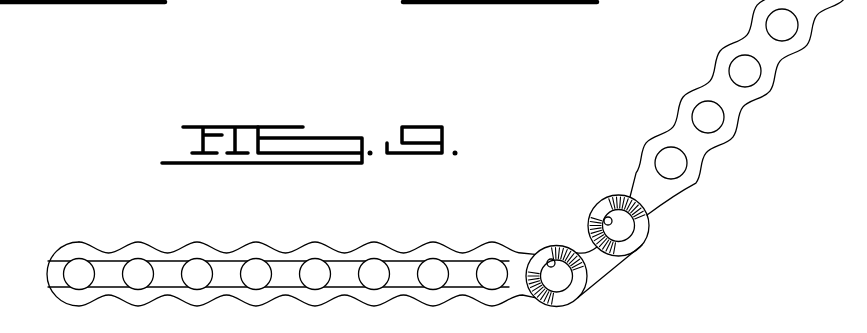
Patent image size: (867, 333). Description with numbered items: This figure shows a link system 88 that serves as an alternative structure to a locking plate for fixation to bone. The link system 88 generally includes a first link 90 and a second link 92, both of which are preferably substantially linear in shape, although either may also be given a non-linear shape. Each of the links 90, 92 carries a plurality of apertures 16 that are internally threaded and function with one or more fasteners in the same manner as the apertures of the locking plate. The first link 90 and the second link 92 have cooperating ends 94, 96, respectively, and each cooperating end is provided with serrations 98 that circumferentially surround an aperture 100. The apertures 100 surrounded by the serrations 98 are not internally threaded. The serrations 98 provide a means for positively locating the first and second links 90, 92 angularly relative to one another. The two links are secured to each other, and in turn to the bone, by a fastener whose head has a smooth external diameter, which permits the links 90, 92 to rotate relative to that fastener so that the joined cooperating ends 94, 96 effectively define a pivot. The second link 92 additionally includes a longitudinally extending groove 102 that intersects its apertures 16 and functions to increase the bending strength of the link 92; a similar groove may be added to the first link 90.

The apertures 16 is at (77, 259).
The link system 88 is at (650, 131).
The first link 90 is at (712, 67).
The second link 92 is at (128, 240).
The cooperating end 94 is at (643, 247).
The cooperating end 96 is at (590, 289).
The serrations 98 is at (650, 226).
The aperture 100 is at (552, 259).
The groove 102 is at (227, 265).